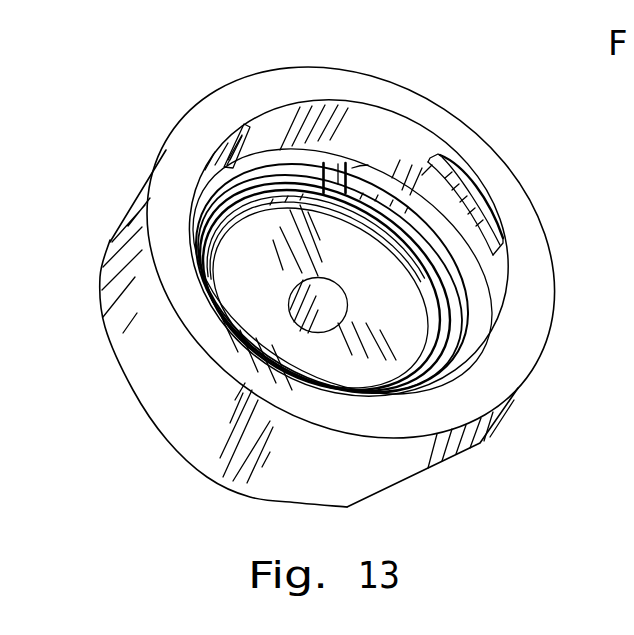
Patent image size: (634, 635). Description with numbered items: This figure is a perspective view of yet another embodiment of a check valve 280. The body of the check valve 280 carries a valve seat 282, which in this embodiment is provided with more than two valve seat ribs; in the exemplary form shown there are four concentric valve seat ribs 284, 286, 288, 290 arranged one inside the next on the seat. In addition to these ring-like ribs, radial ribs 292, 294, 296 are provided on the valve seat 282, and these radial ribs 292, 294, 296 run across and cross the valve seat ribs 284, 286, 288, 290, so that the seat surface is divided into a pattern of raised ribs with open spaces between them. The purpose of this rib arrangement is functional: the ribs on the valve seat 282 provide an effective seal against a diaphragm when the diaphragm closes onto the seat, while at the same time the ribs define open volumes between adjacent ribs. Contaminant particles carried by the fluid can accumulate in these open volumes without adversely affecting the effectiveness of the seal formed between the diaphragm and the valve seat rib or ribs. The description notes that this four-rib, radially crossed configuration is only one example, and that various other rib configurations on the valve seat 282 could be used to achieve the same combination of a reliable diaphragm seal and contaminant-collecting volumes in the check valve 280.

The check valve 280 is at (154, 100).
The valve seat 282 is at (260, 163).
The valve seat rib 284 is at (443, 285).
The valve seat rib 286 is at (452, 302).
The valve seat rib 288 is at (466, 315).
The valve seat rib 290 is at (472, 343).
The radial rib 292 is at (331, 166).
The radial rib 294 is at (335, 182).
The radial rib 296 is at (358, 165).